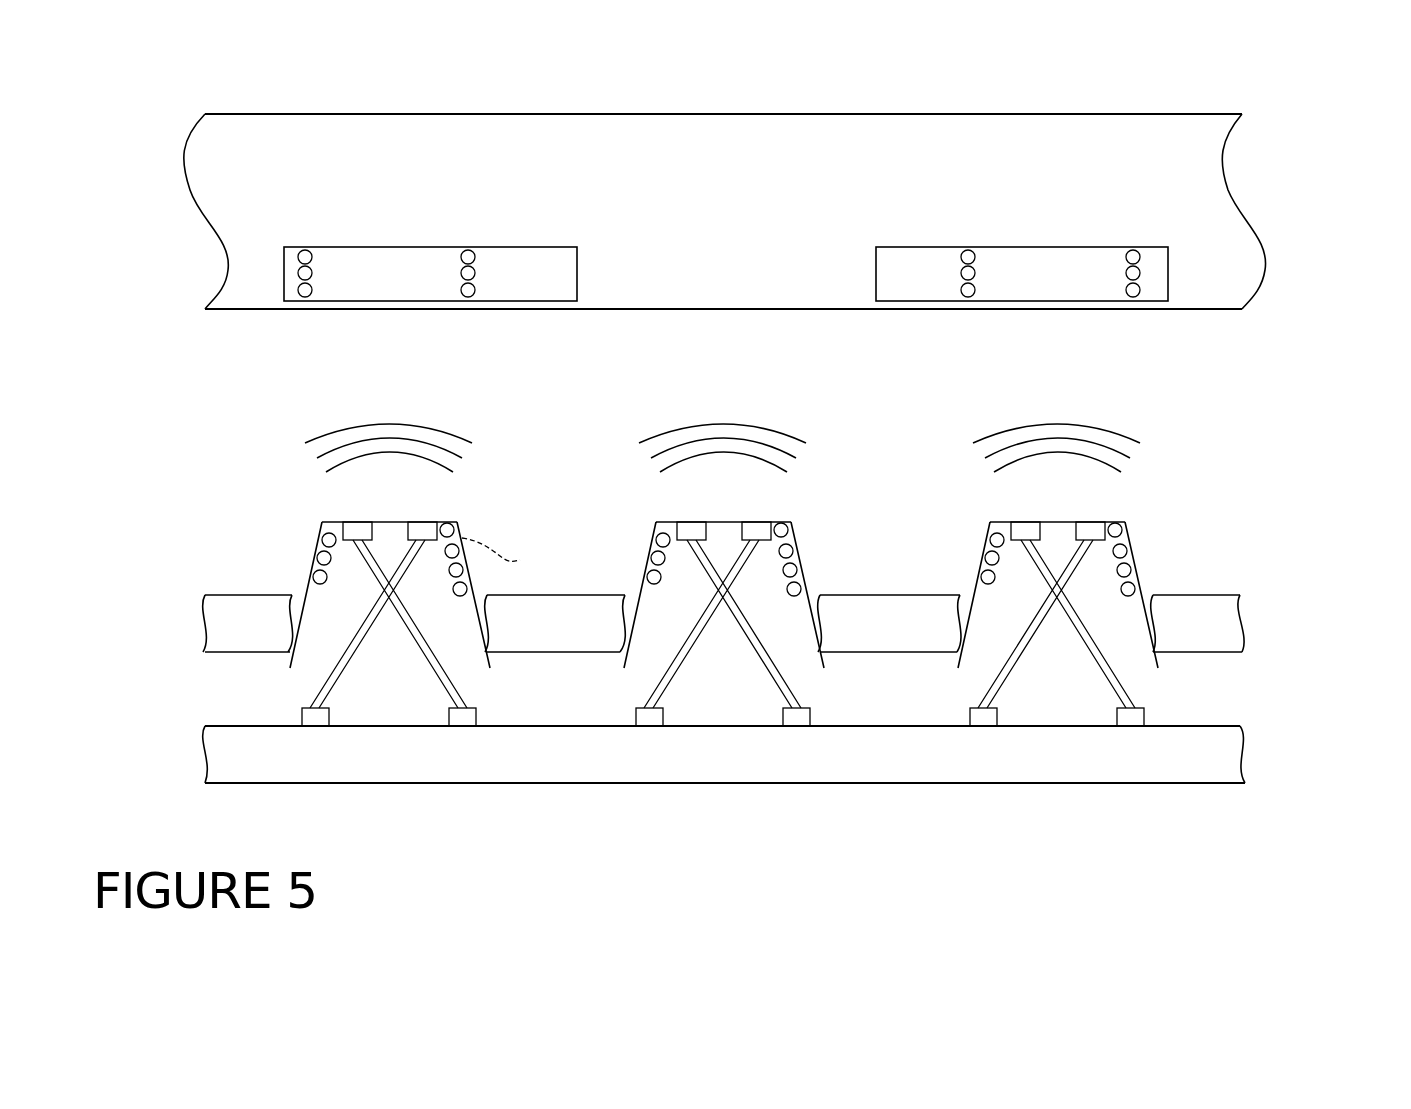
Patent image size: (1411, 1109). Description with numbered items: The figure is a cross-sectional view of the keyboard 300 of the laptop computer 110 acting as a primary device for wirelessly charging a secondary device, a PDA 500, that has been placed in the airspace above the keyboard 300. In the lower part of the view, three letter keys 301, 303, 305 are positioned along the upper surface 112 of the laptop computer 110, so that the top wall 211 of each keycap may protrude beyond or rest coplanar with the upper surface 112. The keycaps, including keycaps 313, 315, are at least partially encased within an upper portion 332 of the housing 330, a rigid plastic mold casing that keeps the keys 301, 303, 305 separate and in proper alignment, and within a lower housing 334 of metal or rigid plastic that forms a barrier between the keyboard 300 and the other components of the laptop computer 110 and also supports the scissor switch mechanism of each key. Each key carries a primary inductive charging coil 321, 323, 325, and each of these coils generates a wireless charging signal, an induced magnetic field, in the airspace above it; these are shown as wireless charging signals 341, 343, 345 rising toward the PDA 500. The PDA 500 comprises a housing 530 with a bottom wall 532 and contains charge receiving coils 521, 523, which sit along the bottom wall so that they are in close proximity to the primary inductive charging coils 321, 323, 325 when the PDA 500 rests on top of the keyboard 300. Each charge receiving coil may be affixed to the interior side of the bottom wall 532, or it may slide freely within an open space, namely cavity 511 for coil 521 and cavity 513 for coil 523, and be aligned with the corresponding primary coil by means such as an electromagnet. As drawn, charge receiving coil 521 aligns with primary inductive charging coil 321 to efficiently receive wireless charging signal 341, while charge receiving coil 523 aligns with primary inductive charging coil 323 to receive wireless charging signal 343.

The PDA 500 is at (148, 105).
The housing 530 is at (1235, 190).
The bottom wall 532 is at (1215, 309).
The cavity 511 is at (540, 247).
The cavity 513 is at (1067, 247).
The charge receiving coil 521 is at (461, 290).
The charge receiving coil 523 is at (961, 290).
The keyboard 300 is at (148, 503).
The letter key 301 is at (351, 545).
The letter key 303 is at (709, 610).
The letter key 305 is at (1041, 610).
The top wall 211 is at (390, 522).
The primary inductive charging coil 321 is at (313, 577).
The primary inductive charging coil 323 is at (647, 577).
The primary inductive charging coil 325 is at (981, 577).
The keycap 313 is at (796, 538).
The keycap 315 is at (1130, 538).
The wireless charging signal 341 is at (379, 437).
The wireless charging signal 343 is at (717, 437).
The wireless charging signal 345 is at (1052, 437).
The housing 330 is at (1248, 623).
The upper portion 332 is at (771, 599).
The lower housing 334 is at (724, 780).
The laptop computer 110 is at (724, 780).
The upper surface 112 is at (1230, 595).